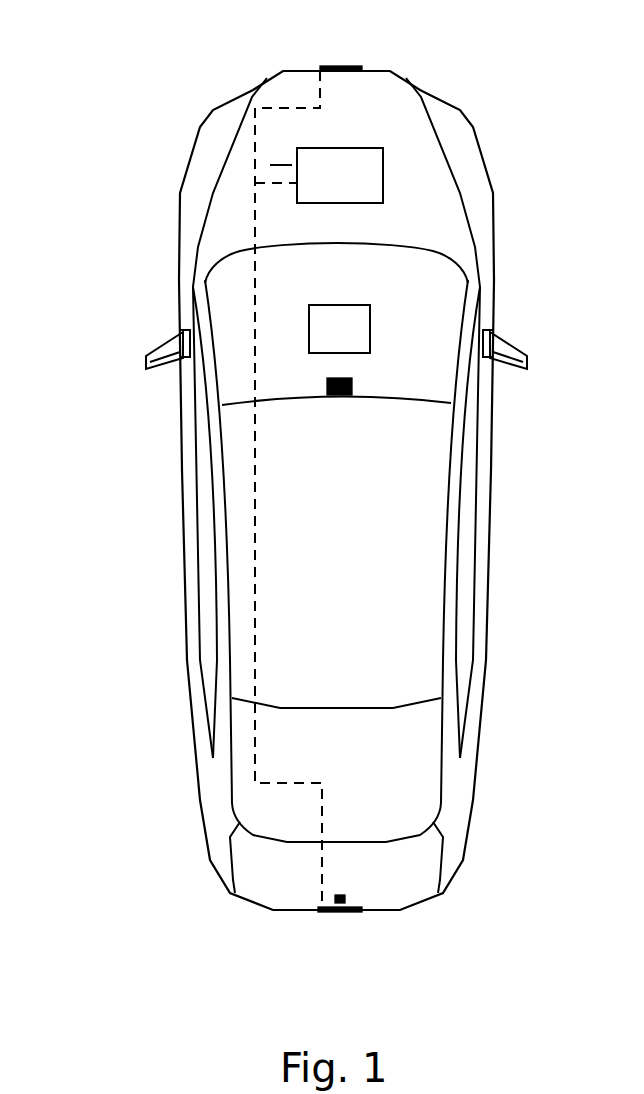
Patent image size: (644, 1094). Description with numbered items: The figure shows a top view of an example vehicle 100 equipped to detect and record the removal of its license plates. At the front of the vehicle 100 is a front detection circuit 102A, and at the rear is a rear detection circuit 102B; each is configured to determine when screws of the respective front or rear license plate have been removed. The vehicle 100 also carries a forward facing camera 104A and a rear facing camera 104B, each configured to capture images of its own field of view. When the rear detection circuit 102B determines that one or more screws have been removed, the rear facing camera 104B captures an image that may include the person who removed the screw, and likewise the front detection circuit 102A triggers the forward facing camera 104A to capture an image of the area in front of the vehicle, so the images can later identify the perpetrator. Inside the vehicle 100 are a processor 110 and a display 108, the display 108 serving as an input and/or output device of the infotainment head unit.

The vehicle 100 is at (197, 146).
The front detection circuit 102A is at (338, 66).
The rear detection circuit 102B is at (345, 912).
The forward facing camera 104A is at (352, 380).
The rear facing camera 104B is at (347, 897).
The display 108 is at (339, 329).
The processor 110 is at (340, 175).